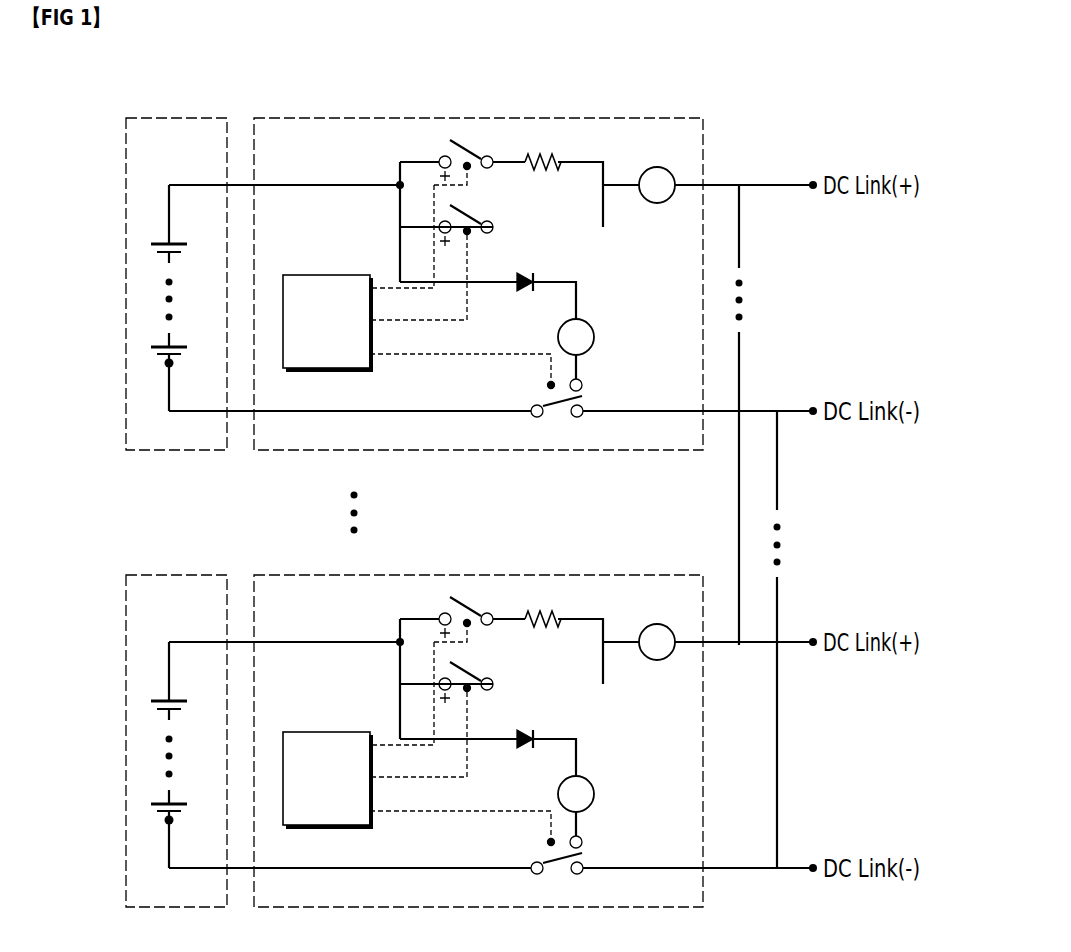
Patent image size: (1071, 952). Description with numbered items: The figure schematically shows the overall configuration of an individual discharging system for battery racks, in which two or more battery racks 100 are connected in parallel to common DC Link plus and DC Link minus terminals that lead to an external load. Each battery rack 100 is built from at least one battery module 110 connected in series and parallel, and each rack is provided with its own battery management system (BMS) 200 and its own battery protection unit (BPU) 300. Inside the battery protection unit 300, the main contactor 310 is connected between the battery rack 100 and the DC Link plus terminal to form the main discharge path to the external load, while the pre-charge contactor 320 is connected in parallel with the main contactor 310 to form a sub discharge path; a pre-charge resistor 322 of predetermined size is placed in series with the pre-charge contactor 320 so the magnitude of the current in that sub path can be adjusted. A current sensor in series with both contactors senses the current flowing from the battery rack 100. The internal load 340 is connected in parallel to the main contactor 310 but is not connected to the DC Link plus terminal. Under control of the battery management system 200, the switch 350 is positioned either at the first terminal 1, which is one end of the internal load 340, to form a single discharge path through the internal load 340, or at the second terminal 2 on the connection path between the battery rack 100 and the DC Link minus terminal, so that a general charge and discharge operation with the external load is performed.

The battery rack 100 is at (187, 118).
The battery module 110 is at (153, 248).
The battery management system (BMS) 200 is at (327, 275).
The battery protection unit (BPU) 300 is at (608, 118).
The main contactor 310 is at (473, 215).
The pre-charge contactor 320 is at (469, 142).
The pre-charge resistor 322 is at (537, 148).
The internal load 340 is at (592, 326).
The switch 350 is at (541, 404).
The first terminal 1 is at (592, 603).
The second terminal 2 is at (592, 658).